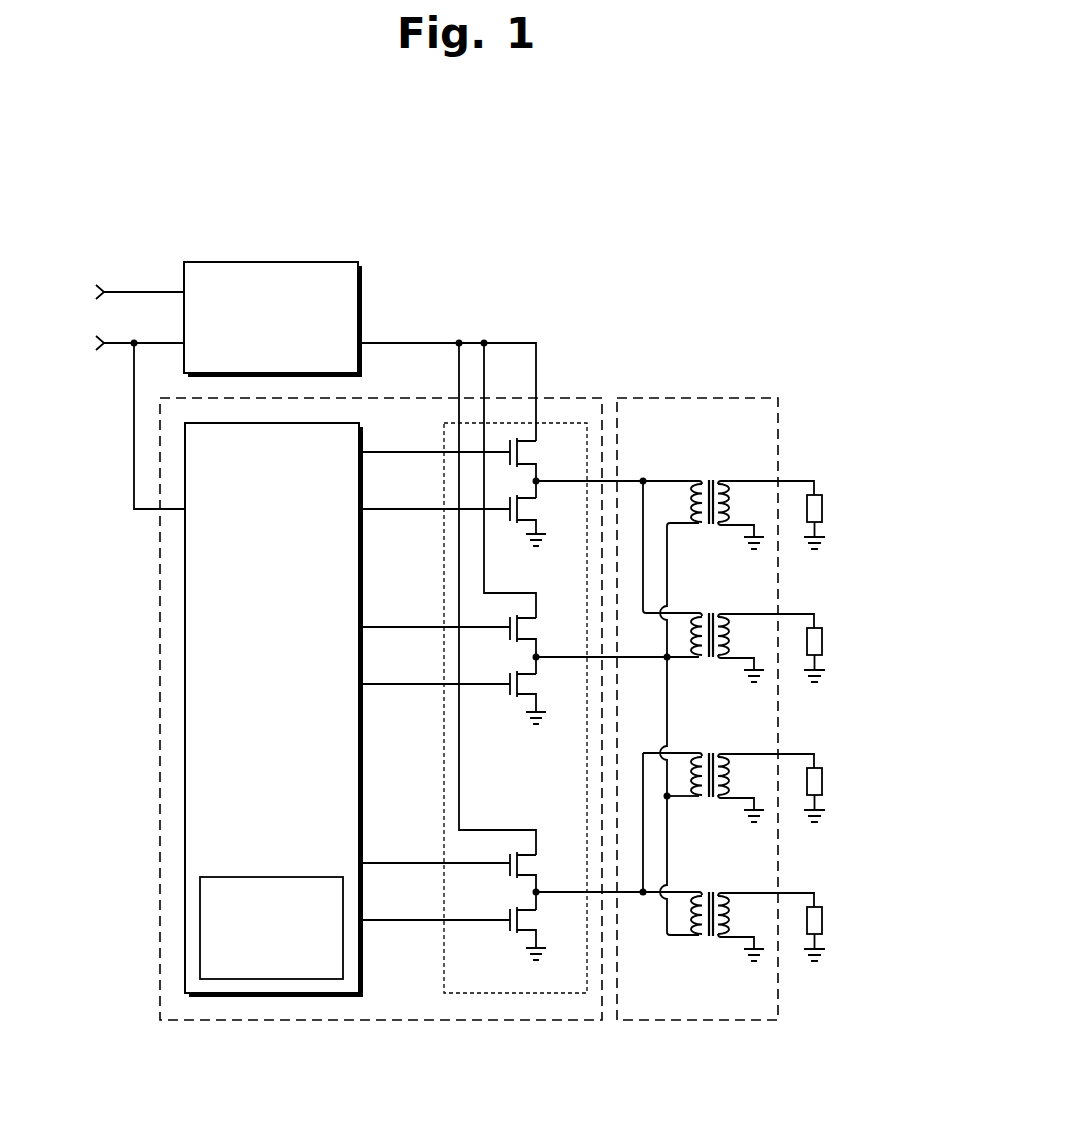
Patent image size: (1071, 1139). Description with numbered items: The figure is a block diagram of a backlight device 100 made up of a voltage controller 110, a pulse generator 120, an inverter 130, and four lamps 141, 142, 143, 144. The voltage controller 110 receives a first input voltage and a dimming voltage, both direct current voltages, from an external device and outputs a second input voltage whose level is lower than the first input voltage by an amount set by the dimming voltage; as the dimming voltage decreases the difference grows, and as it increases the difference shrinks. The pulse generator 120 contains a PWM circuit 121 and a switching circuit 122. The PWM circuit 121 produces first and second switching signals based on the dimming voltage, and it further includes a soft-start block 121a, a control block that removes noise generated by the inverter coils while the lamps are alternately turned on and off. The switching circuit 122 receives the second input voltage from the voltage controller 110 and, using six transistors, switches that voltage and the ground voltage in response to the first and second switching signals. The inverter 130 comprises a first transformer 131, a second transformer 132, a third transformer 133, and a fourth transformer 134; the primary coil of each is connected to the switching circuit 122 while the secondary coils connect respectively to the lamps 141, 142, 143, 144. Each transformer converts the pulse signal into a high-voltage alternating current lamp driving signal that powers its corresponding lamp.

The backlight device 100 is at (600, 218).
The voltage controller 110 is at (313, 261).
The pulse generator 120 is at (580, 398).
The PWM circuit 121 is at (185, 665).
The soft-start block 121a is at (200, 925).
The switching circuit 122 is at (493, 993).
The inverter 130 is at (733, 398).
The first transformer 131 is at (710, 479).
The second transformer 132 is at (710, 612).
The third transformer 133 is at (710, 752).
The fourth transformer 134 is at (710, 891).
The first lamp 141 is at (823, 508).
The second lamp 142 is at (823, 641).
The third lamp 143 is at (823, 781).
The fourth lamp 144 is at (823, 920).